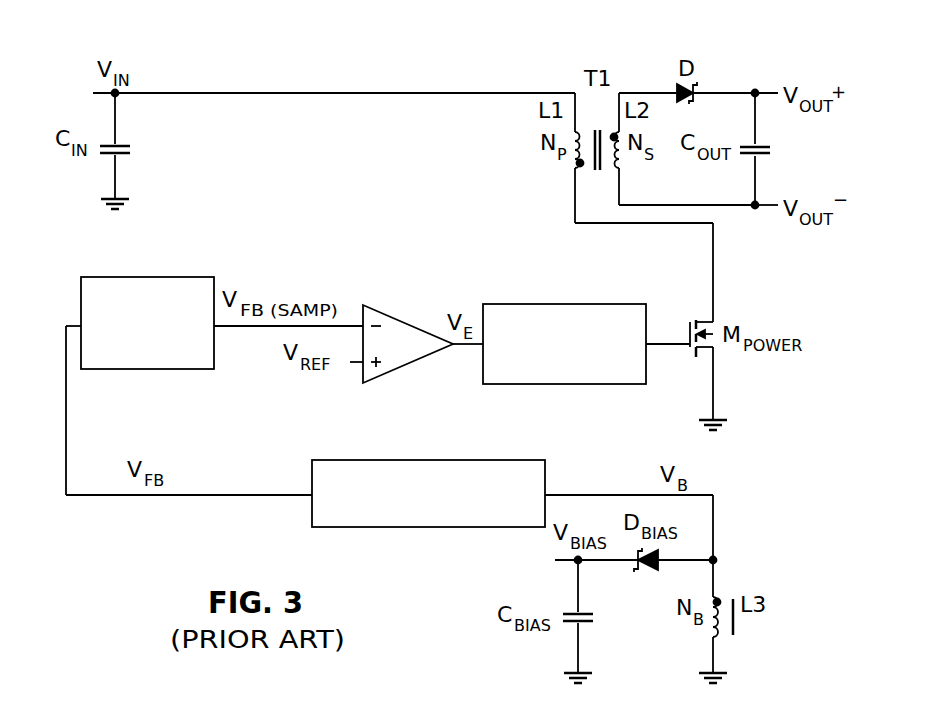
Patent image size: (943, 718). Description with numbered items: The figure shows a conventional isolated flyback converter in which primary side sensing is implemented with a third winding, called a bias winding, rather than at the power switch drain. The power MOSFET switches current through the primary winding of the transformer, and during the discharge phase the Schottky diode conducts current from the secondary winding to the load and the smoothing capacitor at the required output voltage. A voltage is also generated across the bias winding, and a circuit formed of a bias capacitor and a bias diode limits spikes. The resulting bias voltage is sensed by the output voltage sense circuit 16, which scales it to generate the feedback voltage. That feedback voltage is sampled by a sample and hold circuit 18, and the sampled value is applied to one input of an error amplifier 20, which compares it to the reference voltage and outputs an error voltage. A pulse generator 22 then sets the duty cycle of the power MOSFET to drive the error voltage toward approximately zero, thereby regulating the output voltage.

The output voltage sense circuit 16 is at (506, 460).
The sample and hold circuit 18 is at (176, 277).
The error amplifier 20 is at (389, 317).
The pulse generator 22 is at (613, 304).